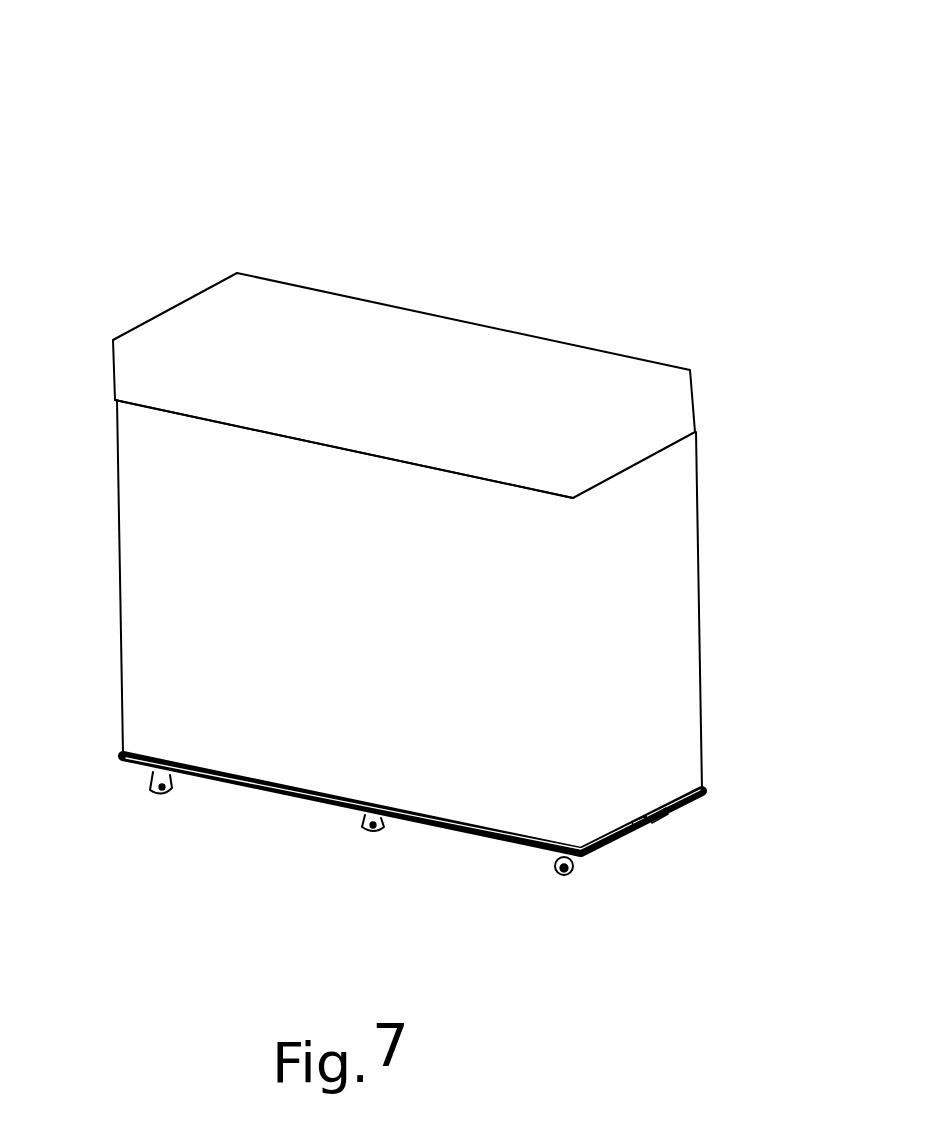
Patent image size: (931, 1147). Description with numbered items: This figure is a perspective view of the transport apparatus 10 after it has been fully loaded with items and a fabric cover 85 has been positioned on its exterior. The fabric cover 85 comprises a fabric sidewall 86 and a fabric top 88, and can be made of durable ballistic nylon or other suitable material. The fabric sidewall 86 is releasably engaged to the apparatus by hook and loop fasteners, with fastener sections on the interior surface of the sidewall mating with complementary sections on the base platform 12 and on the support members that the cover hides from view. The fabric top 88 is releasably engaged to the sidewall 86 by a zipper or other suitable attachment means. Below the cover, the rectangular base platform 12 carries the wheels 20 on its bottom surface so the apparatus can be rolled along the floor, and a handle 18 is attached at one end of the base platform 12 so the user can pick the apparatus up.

The transport apparatus 10 is at (104, 134).
The base platform 12 is at (247, 790).
The handle 18 is at (663, 827).
The wheels 20 is at (155, 787).
The fabric cover 85 is at (118, 494).
The fabric sidewall 86 is at (615, 620).
The fabric top 88 is at (525, 375).